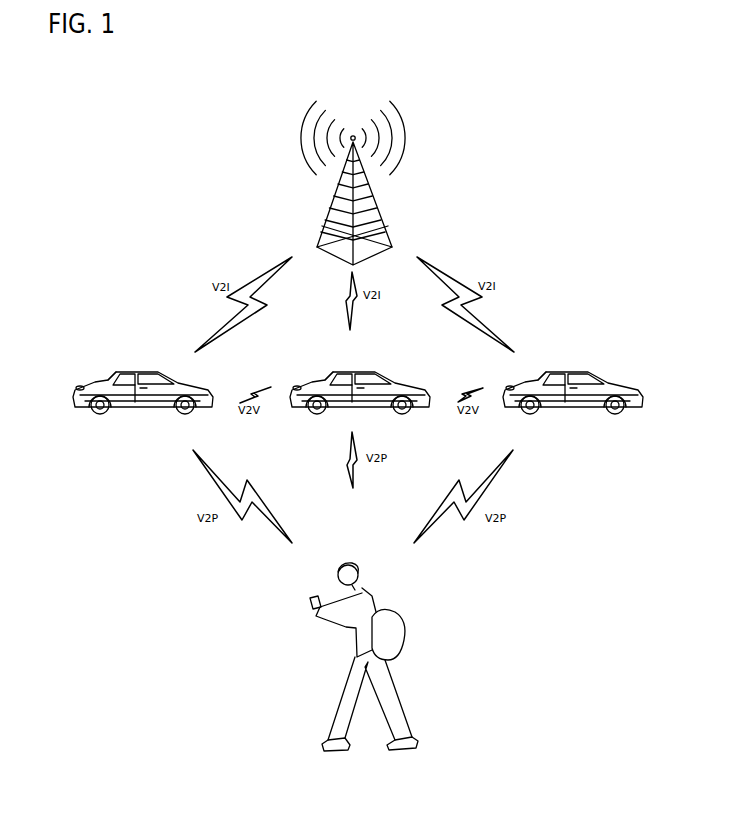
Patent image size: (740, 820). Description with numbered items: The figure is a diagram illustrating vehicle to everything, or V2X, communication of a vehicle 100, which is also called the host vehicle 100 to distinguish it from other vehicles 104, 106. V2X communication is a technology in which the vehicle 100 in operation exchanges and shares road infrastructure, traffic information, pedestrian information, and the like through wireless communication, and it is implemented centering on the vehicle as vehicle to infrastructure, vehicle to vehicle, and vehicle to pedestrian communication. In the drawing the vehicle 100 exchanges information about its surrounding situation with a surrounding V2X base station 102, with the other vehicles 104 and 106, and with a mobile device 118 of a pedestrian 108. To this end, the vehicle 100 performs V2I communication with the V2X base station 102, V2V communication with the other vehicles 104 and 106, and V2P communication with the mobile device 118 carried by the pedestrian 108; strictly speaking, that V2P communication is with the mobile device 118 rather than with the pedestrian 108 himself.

The vehicle 100 is at (347, 368).
The V2X base station 102 is at (379, 206).
The other vehicle 104 is at (132, 368).
The other vehicle 106 is at (562, 368).
The pedestrian 108 is at (353, 561).
The mobile device 118 is at (315, 598).